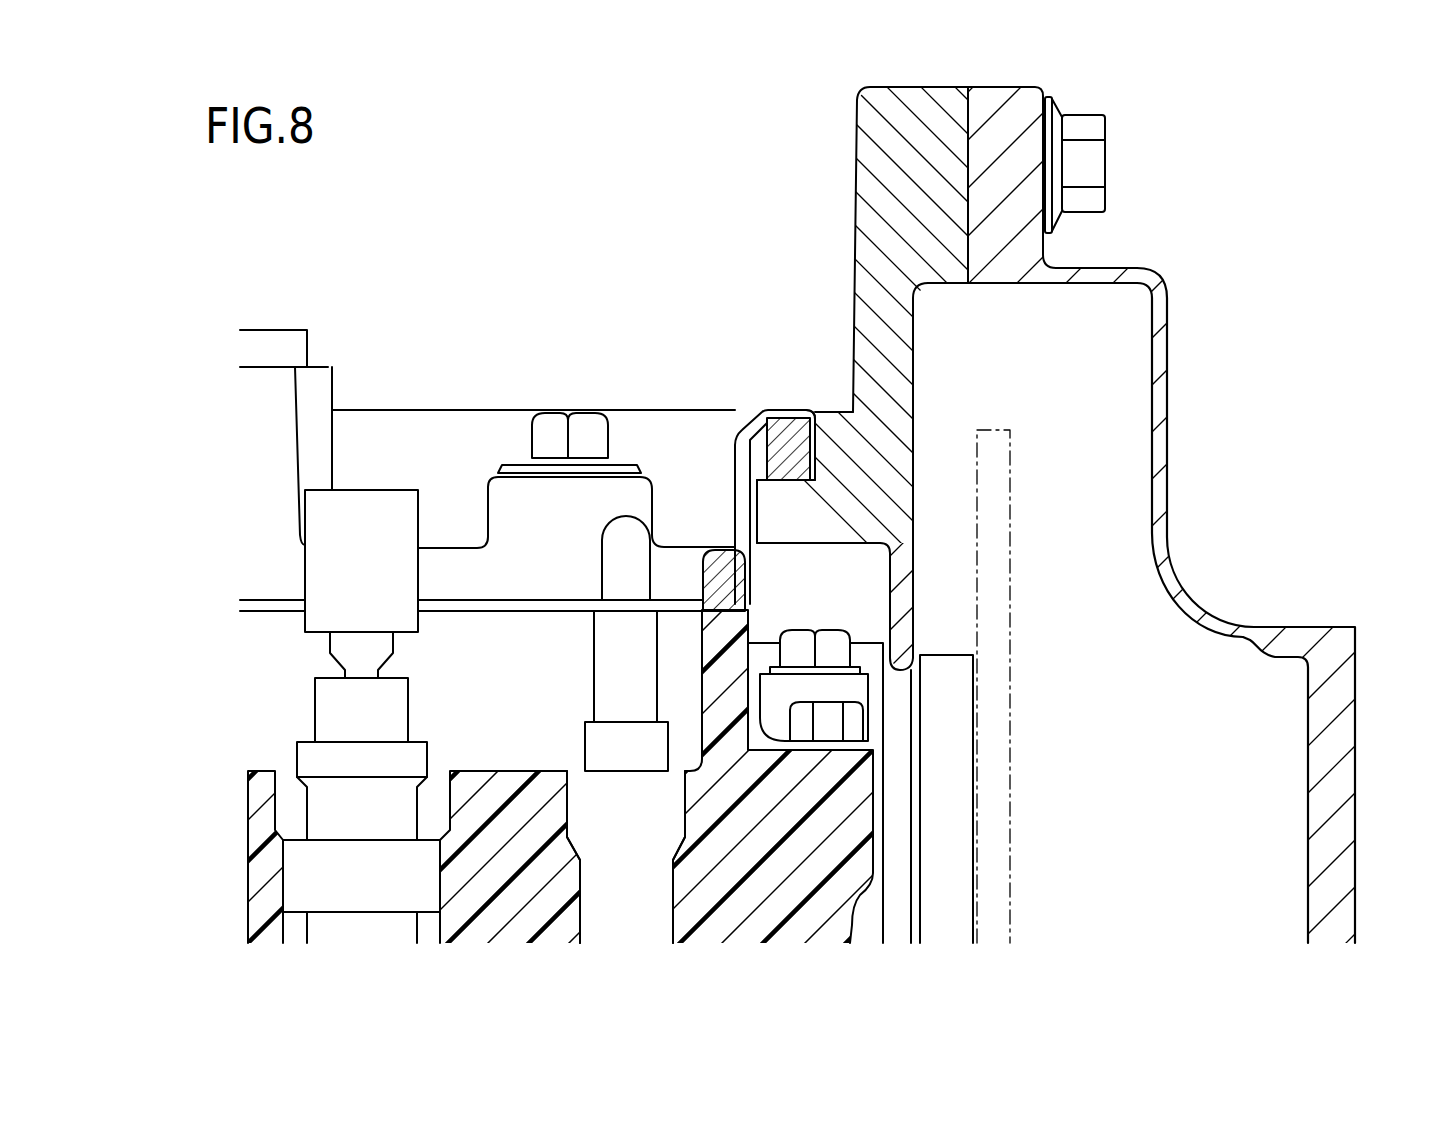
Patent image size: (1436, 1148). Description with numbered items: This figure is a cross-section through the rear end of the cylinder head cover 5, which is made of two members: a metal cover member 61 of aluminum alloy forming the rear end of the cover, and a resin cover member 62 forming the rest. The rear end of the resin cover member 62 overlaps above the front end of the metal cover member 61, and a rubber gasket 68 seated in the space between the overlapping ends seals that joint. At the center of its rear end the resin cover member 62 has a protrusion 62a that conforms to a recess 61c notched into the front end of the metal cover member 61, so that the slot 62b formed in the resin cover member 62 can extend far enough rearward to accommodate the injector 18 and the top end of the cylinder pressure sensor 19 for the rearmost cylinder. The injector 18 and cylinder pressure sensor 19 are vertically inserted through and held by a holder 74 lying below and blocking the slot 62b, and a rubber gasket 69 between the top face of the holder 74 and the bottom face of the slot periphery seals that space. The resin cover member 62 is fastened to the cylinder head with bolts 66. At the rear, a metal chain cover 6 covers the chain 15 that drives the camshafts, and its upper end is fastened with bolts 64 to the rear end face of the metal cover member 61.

The cylinder head cover 5 is at (833, 212).
The chain cover 6 is at (1158, 403).
The chain 15 is at (1013, 663).
The injector 18 is at (338, 712).
The cylinder pressure sensor 19 is at (600, 672).
The metal cover member 61 is at (916, 511).
The recess 61c is at (757, 507).
The resin cover member 62 is at (856, 405).
The protrusion 62a is at (828, 427).
The slot 62b is at (535, 548).
The bolt 64 is at (1078, 113).
The bolt 66 is at (590, 423).
The rubber gasket 68 is at (810, 445).
The rubber gasket 69 is at (733, 578).
The holder 74 is at (850, 827).